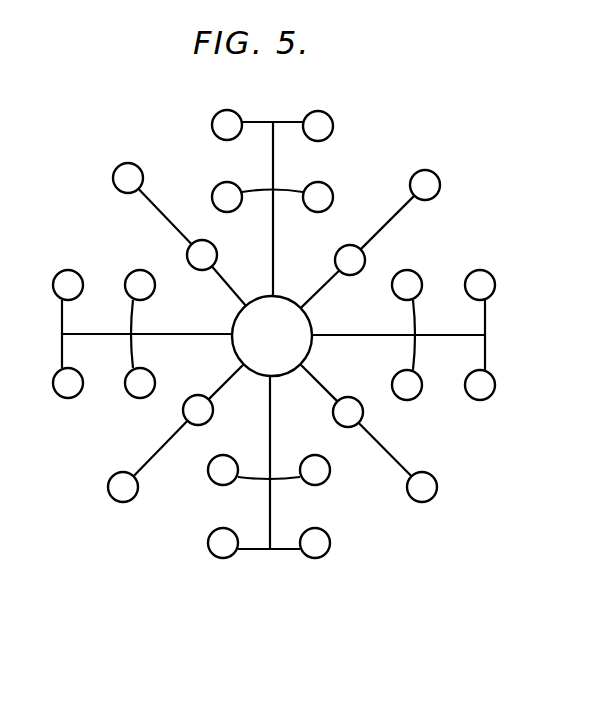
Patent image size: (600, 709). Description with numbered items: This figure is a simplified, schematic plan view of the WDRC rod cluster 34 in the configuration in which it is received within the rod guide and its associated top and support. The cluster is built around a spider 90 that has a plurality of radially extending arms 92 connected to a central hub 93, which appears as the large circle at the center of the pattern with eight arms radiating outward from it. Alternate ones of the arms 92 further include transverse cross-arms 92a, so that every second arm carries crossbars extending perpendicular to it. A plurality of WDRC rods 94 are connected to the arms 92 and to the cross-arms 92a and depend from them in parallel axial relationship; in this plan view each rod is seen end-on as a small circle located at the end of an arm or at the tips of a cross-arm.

The WDRC rod cluster 34 is at (106, 571).
The spider 90 is at (380, 153).
The radially extending arms 92 is at (325, 283).
The transverse cross-arms 92a is at (483, 312).
The central hub 93 is at (240, 356).
The WDRC rods 94 is at (200, 240).